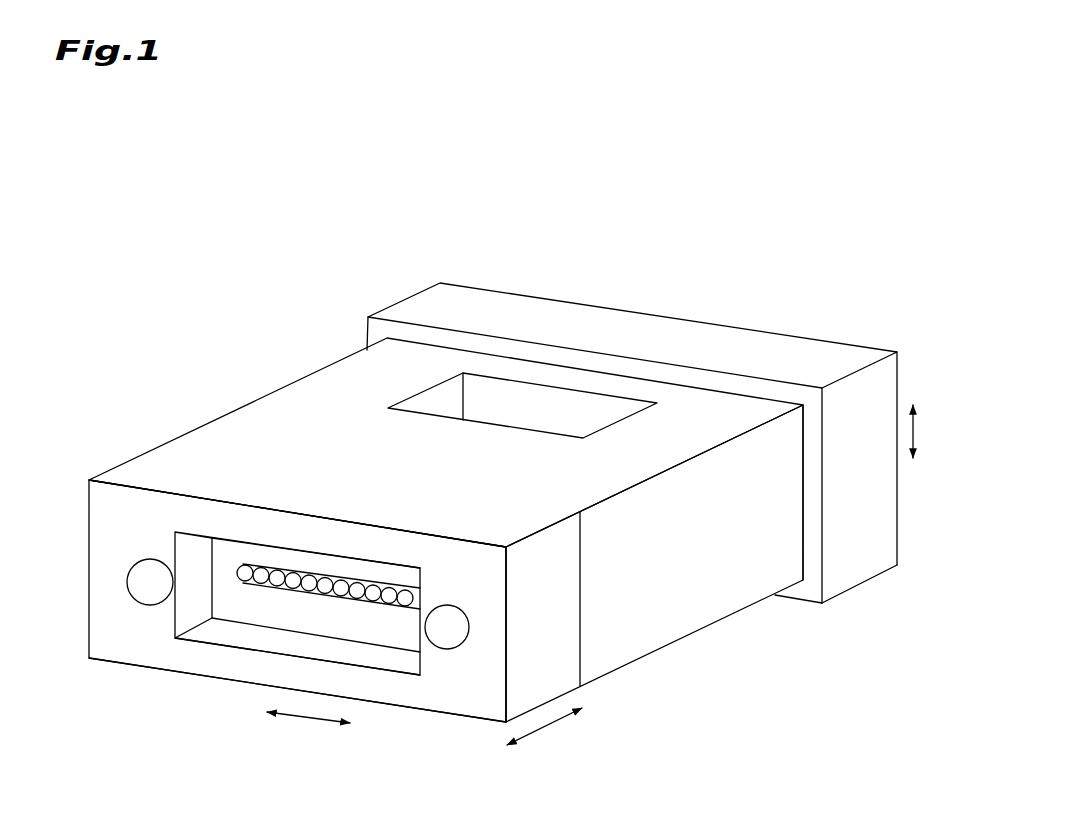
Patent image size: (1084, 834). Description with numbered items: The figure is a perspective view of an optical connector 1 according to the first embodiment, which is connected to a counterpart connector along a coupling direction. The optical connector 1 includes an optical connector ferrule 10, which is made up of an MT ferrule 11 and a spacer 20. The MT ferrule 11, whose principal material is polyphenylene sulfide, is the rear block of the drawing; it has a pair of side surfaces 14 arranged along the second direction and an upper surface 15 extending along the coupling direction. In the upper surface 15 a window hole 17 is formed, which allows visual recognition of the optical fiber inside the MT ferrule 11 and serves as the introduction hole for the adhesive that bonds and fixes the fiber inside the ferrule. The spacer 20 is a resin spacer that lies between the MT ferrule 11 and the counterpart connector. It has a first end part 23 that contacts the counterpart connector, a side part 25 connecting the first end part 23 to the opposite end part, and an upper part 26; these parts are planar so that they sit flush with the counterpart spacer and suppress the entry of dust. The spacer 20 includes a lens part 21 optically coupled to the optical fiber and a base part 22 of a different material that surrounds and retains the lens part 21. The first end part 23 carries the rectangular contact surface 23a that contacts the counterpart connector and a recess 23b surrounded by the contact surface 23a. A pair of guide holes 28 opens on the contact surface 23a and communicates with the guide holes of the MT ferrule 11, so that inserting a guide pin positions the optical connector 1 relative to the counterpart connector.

The optical connector 1 is at (793, 282).
The optical connector ferrule 10 is at (412, 282).
The MT ferrule 11 is at (327, 380).
The side surfaces 14 is at (705, 595).
The upper surface 15 is at (277, 408).
The window hole 17 is at (528, 407).
The spacer 20 is at (118, 473).
The lens part 21 is at (262, 572).
The base part 22 is at (370, 690).
The first end part 23 is at (217, 665).
The contact surface 23a is at (422, 700).
The recess 23b is at (272, 605).
The side part 25 is at (550, 650).
The upper part 26 is at (150, 470).
The guide holes 28 is at (147, 583).